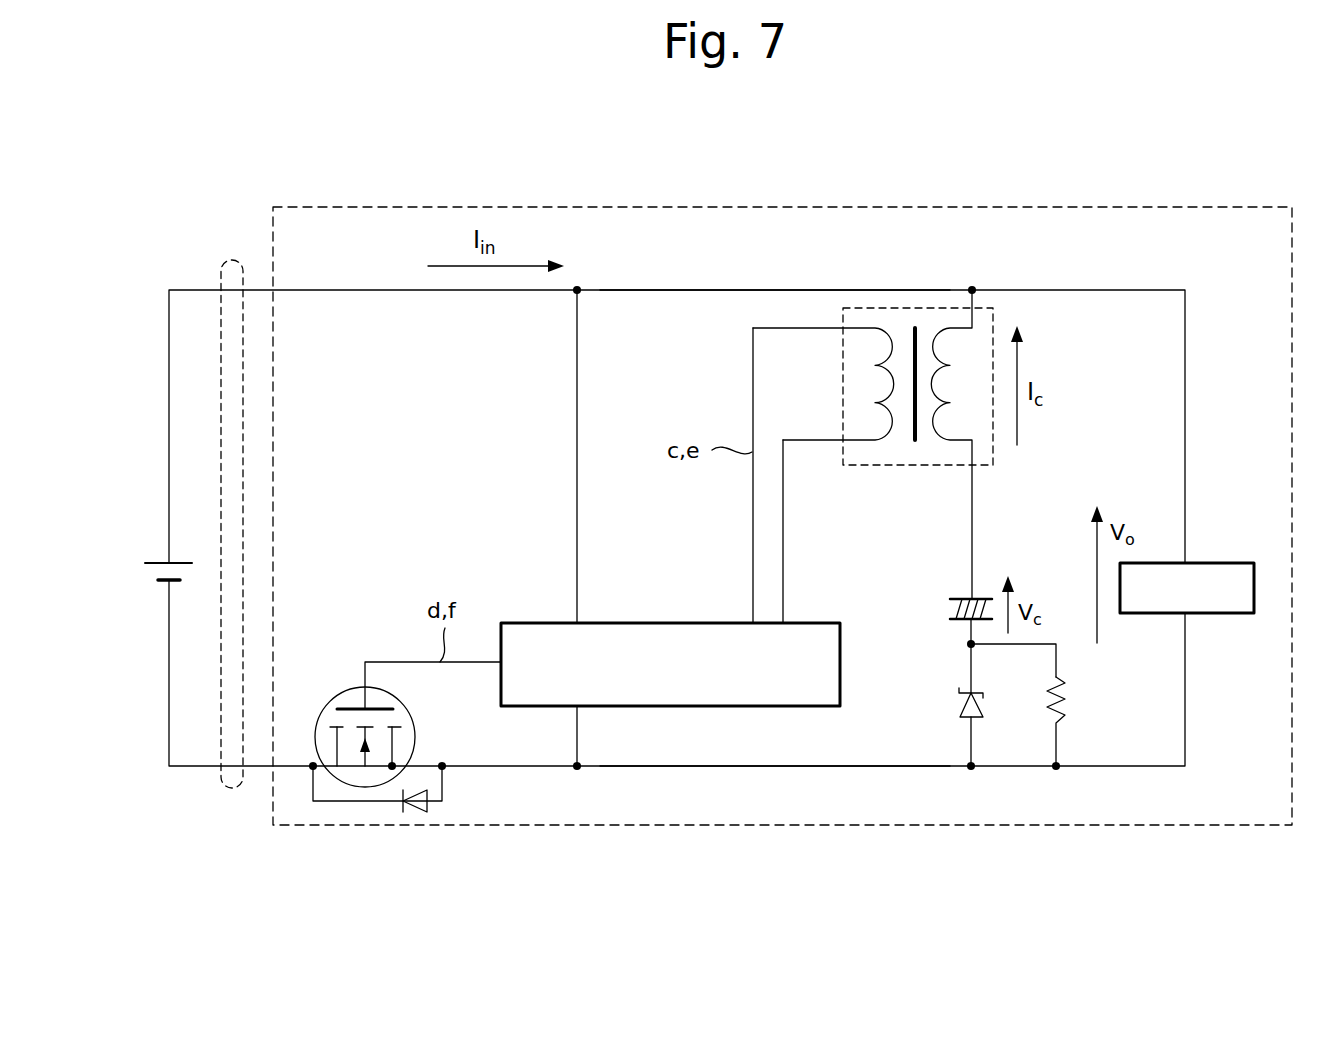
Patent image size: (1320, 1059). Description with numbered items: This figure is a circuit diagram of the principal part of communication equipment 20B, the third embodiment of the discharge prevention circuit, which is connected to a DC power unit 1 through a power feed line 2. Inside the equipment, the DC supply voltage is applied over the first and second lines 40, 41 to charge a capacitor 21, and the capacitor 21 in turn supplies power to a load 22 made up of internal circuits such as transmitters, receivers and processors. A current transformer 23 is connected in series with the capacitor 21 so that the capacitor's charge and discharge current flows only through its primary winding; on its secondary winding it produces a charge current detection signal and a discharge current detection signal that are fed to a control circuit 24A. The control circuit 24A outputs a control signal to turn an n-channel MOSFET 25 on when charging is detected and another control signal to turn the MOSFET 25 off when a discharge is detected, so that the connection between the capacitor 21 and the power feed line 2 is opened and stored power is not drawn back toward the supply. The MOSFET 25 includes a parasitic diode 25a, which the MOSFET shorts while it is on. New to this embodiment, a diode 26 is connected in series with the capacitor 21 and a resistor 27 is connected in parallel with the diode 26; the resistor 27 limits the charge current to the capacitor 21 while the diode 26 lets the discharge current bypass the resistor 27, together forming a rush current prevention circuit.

The DC power unit 1 is at (160, 562).
The power feed line 2 is at (233, 260).
The communication equipment 20B is at (748, 207).
The capacitor 21 is at (948, 608).
The load 22 is at (1228, 563).
The current transformer 23 is at (893, 308).
The control circuit 24A is at (665, 623).
The n-channel MOSFET 25 is at (415, 727).
The parasitic diode 25a is at (415, 815).
The diode 26 is at (958, 705).
The resistor 27 is at (1063, 700).
The first line 40 is at (713, 290).
The second line 41 is at (702, 766).